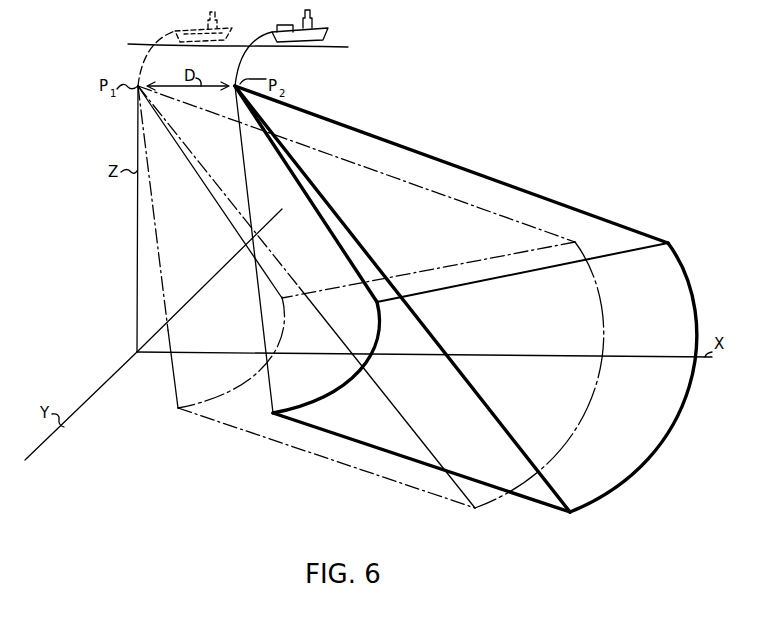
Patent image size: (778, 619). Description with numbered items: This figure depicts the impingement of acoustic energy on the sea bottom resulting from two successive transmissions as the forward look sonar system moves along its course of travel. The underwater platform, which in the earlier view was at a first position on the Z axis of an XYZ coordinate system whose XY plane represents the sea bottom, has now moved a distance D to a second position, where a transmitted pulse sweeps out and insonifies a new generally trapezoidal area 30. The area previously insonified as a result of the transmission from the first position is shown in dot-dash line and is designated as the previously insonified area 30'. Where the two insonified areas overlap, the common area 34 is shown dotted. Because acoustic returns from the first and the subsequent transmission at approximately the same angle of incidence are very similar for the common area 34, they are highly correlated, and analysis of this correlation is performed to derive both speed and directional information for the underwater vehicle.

The insonified area 30 is at (466, 299).
The previously insonified area 30' is at (371, 310).
The overlap area 34 is at (346, 390).